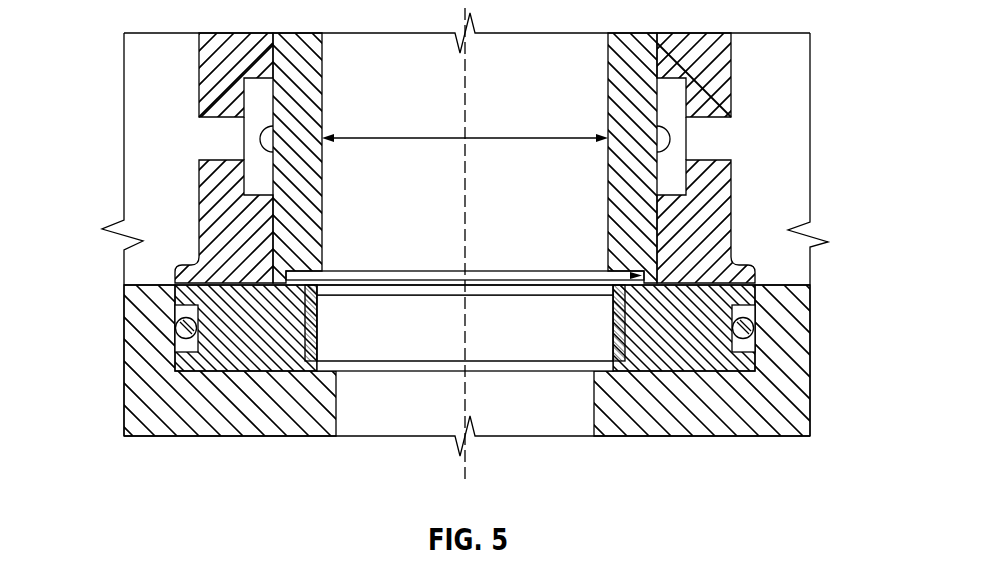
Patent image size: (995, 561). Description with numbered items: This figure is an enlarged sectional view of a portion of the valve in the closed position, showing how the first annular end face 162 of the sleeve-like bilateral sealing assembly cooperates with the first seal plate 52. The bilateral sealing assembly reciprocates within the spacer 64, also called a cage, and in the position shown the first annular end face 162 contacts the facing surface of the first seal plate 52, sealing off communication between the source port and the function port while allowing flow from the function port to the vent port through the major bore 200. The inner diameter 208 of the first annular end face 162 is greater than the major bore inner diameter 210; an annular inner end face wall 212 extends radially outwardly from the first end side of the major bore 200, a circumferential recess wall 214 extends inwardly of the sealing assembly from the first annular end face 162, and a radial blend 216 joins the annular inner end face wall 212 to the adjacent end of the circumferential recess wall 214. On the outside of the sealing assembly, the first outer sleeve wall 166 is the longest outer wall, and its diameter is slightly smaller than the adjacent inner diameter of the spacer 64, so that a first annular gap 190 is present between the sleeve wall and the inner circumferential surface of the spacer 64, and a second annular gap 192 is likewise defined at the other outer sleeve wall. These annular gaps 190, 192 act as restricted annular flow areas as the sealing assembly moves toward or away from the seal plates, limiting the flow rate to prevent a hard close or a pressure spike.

The major bore 200 is at (562, 100).
The major bore inner diameter 210 is at (405, 140).
The inner diameter of the first annular end face 208 is at (480, 272).
The second annular gap 192 is at (668, 220).
The radial blend 216 is at (292, 278).
The annular inner end face wall 212 is at (313, 292).
The spacer 64 is at (713, 187).
The first outer sleeve wall 166 is at (657, 250).
The first annular gap 190 is at (670, 268).
The first annular end face 162 is at (710, 340).
The first seal plate 52 is at (725, 388).
The circumferential recess wall 214 is at (272, 283).